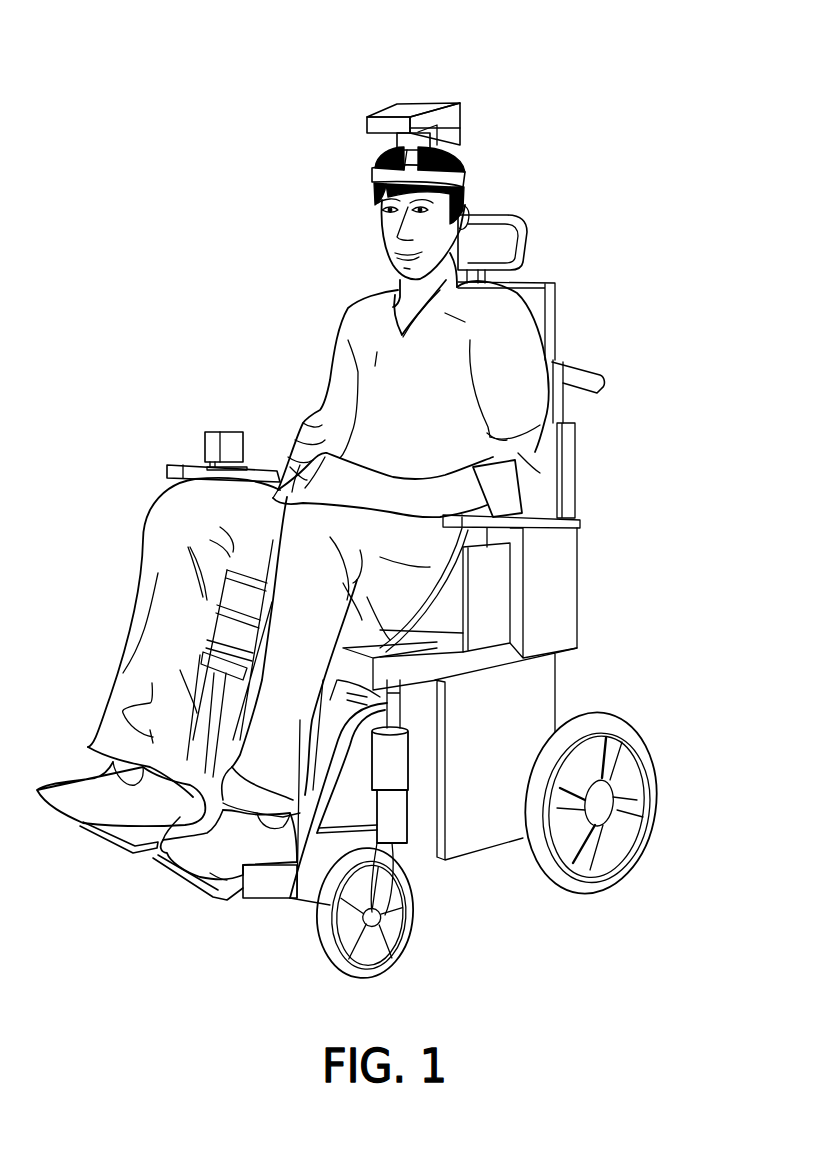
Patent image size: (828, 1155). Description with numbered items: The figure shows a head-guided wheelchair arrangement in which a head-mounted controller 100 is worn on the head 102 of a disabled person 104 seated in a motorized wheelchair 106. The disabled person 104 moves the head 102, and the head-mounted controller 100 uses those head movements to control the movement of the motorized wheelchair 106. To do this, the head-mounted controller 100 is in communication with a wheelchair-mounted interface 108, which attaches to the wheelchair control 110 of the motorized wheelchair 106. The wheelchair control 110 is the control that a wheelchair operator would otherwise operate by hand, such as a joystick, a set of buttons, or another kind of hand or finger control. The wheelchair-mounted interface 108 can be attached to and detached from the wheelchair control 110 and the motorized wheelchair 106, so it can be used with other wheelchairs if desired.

The head-mounted controller 100 is at (405, 113).
The head 102 is at (382, 242).
The disabled person 104 is at (578, 462).
The motorized wheelchair 106 is at (527, 243).
The wheelchair-mounted interface 108 is at (237, 437).
The wheelchair control 110 is at (190, 461).